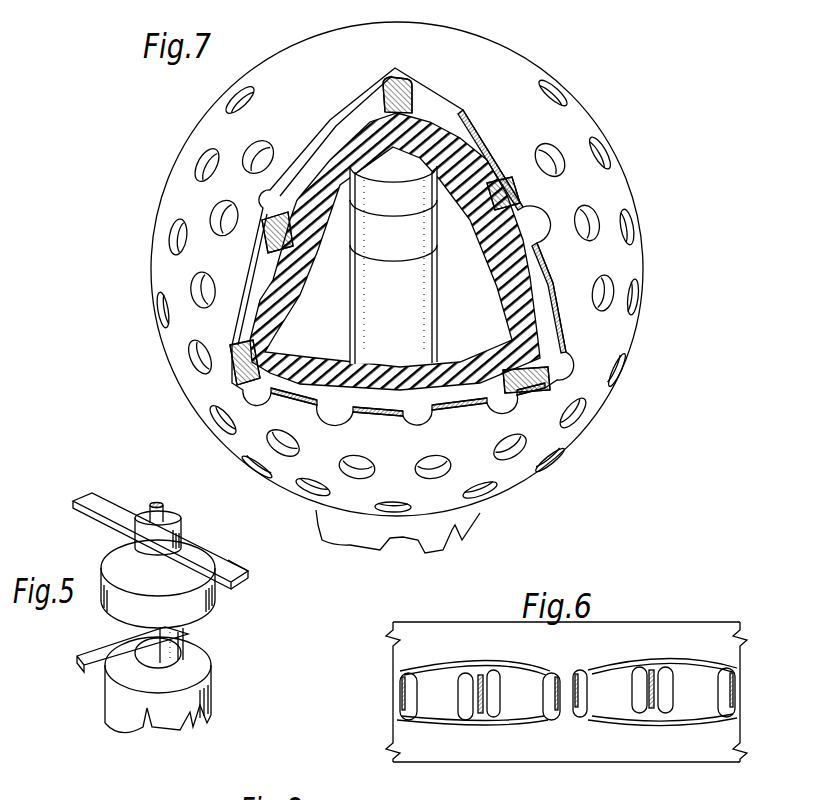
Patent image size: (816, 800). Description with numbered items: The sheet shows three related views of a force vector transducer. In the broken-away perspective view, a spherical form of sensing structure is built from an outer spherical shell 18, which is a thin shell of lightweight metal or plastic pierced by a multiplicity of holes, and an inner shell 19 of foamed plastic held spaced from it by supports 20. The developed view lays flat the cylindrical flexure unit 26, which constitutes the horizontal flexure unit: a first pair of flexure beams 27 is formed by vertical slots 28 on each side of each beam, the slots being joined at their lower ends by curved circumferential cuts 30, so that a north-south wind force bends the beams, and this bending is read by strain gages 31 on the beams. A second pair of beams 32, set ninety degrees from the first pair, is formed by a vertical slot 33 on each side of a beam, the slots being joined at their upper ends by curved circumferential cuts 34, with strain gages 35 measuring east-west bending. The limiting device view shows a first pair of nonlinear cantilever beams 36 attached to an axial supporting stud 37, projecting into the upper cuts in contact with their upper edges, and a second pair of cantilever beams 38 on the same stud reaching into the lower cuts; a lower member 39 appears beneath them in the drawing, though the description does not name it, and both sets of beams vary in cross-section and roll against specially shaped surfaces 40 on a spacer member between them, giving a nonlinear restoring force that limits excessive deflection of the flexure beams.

In FIG. 7, the outer spherical shell 18 is at (628, 190).
In FIG. 7, the inner shell 19 is at (510, 303).
In FIG. 7, the supports 20 is at (382, 90).
In FIG. 6, the cylindrical flexure unit 26 is at (657, 615).
In FIG. 6, the first pair of flexure beams 27 is at (477, 694).
In FIG. 6, the vertical cuts or slots 28 is at (490, 693).
In FIG. 6, the curved circumferential cuts 30 is at (437, 722).
In FIG. 6, the strain gages 31 is at (493, 722).
In FIG. 6, the second pair of beams 32 is at (398, 682).
In FIG. 6, the vertical slot 33 is at (405, 714).
In FIG. 6, the curved circumferential cuts 34 is at (503, 660).
In FIG. 6, the strain gages 35 is at (410, 695).
In FIG. 5, the cantilever beams 36 is at (115, 507).
In FIG. 5, the axial supporting stud 37 is at (165, 513).
In FIG. 5, the cantilever beams 38 is at (246, 580).
In FIG. 5, the lower cup 39 is at (158, 685).
In FIG. 5, the specially shaped surface 40 is at (113, 556).